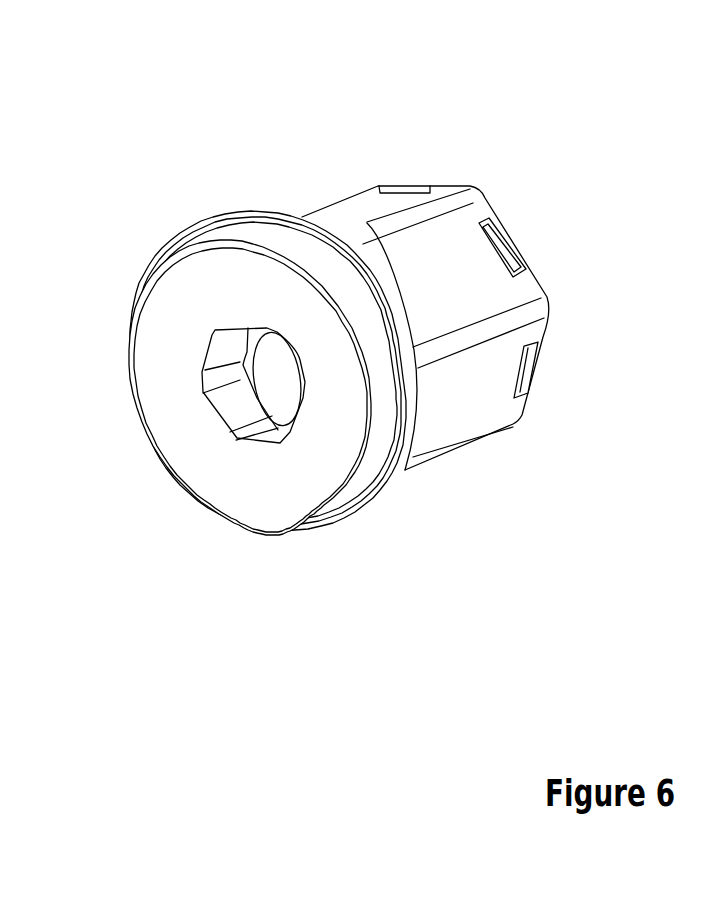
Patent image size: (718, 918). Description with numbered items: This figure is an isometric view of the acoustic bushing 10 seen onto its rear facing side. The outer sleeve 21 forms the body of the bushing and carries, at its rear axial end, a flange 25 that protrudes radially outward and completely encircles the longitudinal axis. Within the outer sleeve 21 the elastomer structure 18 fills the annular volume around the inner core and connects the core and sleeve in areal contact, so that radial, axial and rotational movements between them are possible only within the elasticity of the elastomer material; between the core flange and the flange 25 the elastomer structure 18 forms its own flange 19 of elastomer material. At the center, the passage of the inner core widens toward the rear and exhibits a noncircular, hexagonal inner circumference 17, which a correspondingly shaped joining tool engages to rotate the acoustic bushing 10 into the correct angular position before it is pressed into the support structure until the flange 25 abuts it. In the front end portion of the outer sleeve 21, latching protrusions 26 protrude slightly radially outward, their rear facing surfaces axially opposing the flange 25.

The acoustic bushing 10 is at (504, 150).
The noncircular inner circumference 17 is at (227, 352).
The elastomer structure 18 is at (270, 470).
The flange 19 is at (372, 487).
The outer sleeve 21 is at (452, 428).
The flange 25 is at (262, 210).
The latching protrusions 26 is at (533, 377).